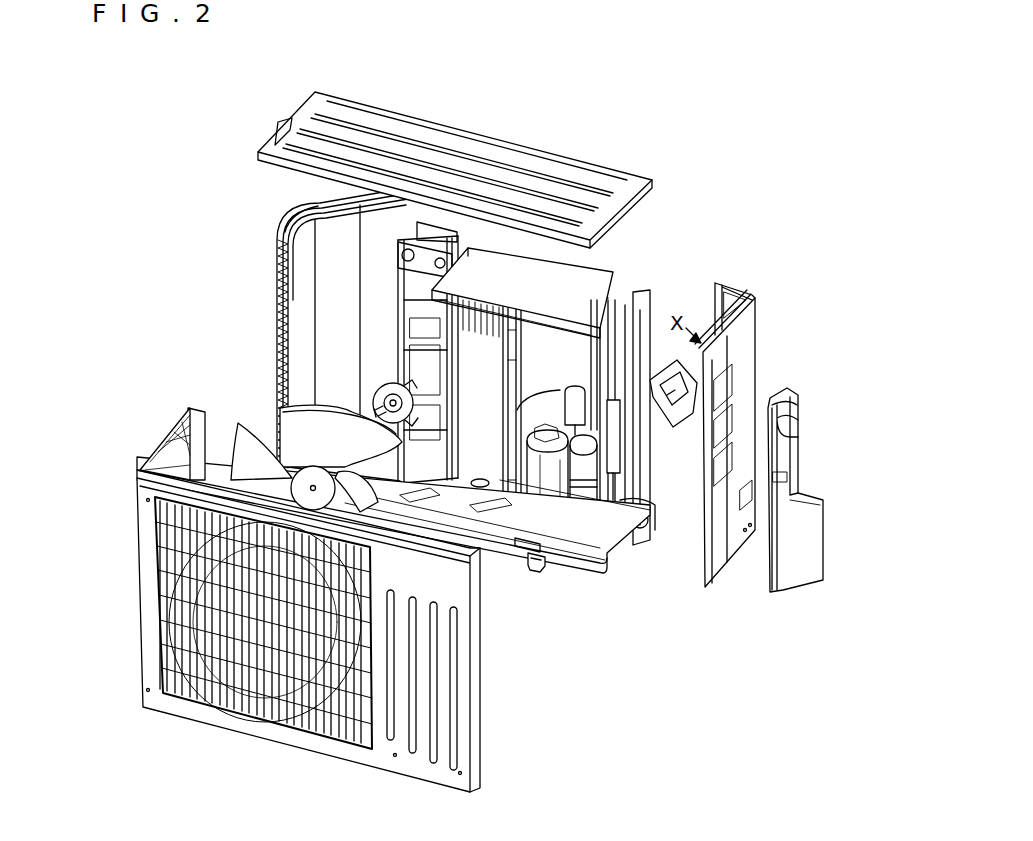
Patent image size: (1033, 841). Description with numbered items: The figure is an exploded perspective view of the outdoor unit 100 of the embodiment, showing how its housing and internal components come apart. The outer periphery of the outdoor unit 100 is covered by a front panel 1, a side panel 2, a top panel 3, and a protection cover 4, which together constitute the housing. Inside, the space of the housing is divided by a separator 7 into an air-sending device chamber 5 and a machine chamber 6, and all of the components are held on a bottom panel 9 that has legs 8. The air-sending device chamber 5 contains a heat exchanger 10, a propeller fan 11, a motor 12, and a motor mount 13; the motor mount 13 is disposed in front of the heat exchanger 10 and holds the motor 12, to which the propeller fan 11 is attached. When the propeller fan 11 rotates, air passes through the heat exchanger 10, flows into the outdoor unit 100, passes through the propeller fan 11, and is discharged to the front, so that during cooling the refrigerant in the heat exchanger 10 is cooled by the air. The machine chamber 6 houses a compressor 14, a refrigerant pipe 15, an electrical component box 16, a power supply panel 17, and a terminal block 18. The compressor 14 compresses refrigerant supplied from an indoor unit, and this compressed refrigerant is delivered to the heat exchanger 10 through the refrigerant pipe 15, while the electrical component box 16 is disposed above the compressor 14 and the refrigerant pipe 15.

The front panel 1 is at (470, 732).
The side panel 2 is at (737, 333).
The top panel 3 is at (500, 172).
The protection cover 4 is at (796, 396).
The air-sending device chamber 5 is at (337, 312).
The machine chamber 6 is at (553, 510).
The separator 7 is at (525, 542).
The legs 8 is at (547, 573).
The bottom panel 9 is at (610, 557).
The heat exchanger 10 is at (298, 225).
The propeller fan 11 is at (310, 419).
The motor 12 is at (377, 391).
The motor mount 13 is at (403, 270).
The compressor 14 is at (581, 558).
The refrigerant pipe 15 is at (632, 320).
The electrical component box 16 is at (590, 293).
The power supply panel 17 is at (667, 355).
The terminal block 18 is at (676, 412).
The outdoor unit 100 is at (676, 160).